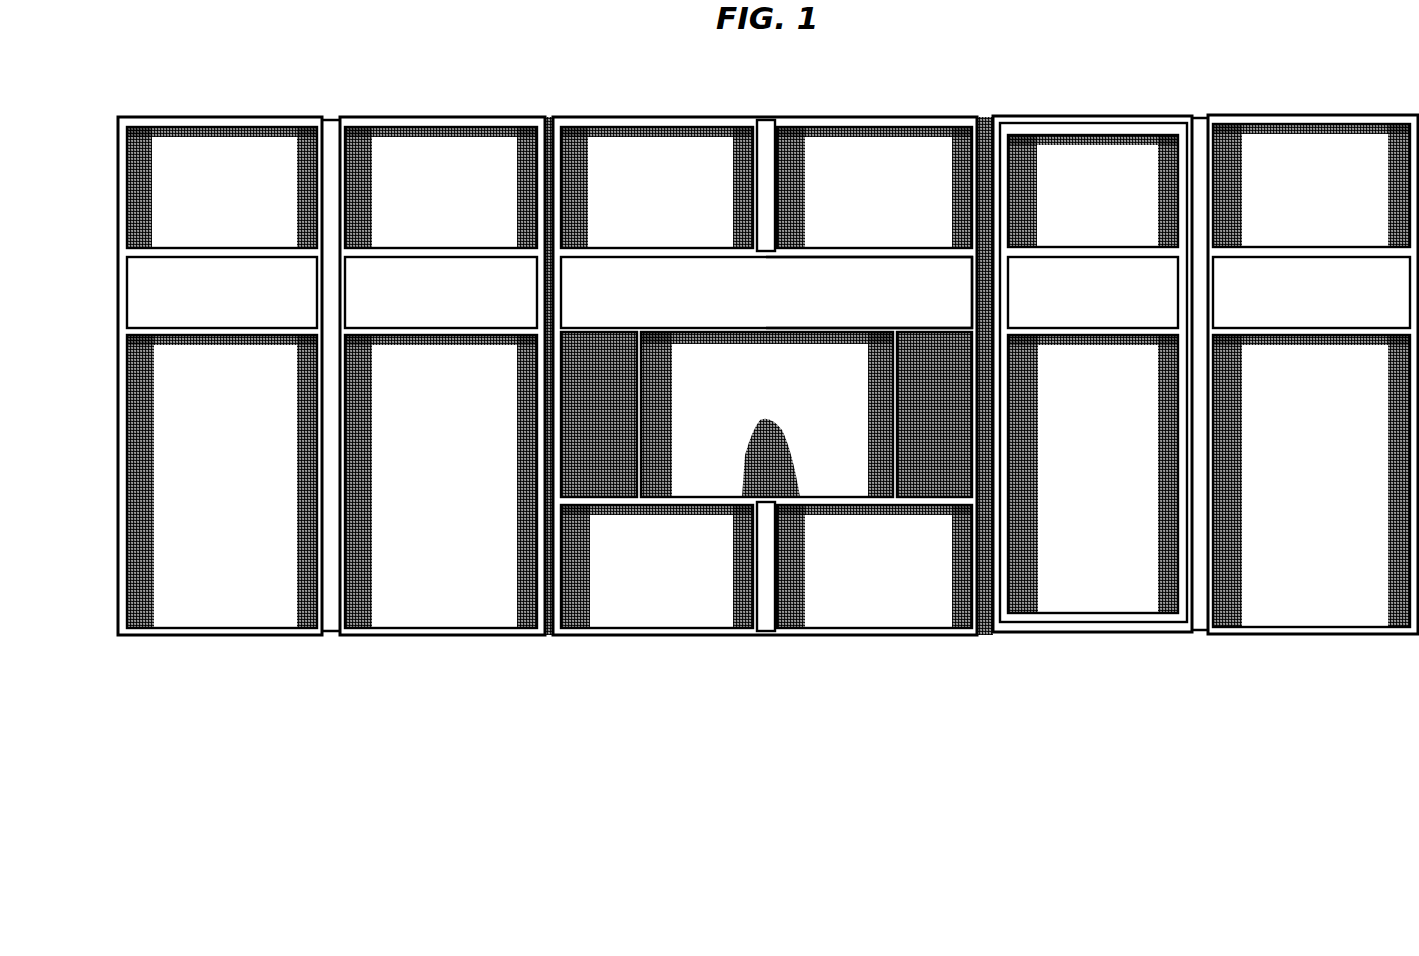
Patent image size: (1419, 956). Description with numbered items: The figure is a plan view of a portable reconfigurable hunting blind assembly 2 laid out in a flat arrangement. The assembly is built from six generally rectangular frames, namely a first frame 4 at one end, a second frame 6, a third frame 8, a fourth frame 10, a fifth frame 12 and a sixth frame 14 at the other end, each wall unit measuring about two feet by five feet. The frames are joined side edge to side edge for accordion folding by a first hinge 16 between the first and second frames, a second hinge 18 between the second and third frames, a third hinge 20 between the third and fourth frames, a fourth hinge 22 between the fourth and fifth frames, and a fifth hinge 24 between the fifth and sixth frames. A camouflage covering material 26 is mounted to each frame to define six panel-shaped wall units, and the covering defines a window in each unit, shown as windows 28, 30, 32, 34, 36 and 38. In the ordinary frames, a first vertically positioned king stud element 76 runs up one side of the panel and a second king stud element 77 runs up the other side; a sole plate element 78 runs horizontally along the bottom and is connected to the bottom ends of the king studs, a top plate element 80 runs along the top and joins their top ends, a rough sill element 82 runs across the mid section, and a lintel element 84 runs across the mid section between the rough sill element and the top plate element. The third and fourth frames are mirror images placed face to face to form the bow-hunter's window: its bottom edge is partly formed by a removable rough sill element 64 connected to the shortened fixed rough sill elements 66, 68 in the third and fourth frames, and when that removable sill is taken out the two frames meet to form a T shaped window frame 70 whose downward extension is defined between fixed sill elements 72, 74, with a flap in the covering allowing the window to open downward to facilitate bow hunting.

The hunting blind assembly 2 is at (1268, 84).
The first frame 4 is at (220, 379).
The second frame 6 is at (442, 409).
The third frame 8 is at (663, 637).
The fourth frame 10 is at (875, 637).
The fifth frame 12 is at (1092, 408).
The sixth frame 14 is at (1313, 408).
The first hinge 16 is at (330, 632).
The second hinge 18 is at (548, 637).
The third hinge 20 is at (768, 622).
The fourth hinge 22 is at (985, 637).
The fifth hinge 24 is at (1200, 630).
The camouflage covering material 26 is at (1294, 482).
The window 28 is at (204, 304).
The window 30 is at (422, 304).
The window 32 is at (575, 304).
The window 34 is at (922, 304).
The window 36 is at (1077, 304).
The window 38 is at (1294, 304).
The removable rough sill element 64 is at (742, 326).
The rough sill element 66 is at (625, 326).
The rough sill element 68 is at (908, 326).
The T shaped window frame 70 is at (747, 393).
The fixed sill element 72 is at (642, 430).
The fixed sill element 74 is at (890, 425).
The king stud element 76 is at (132, 484).
The right edge region 77 is at (318, 565).
The sole plate element 78 is at (187, 628).
The top plate element 80 is at (178, 126).
The rough sill element 82 is at (232, 336).
The lintel element 84 is at (248, 247).